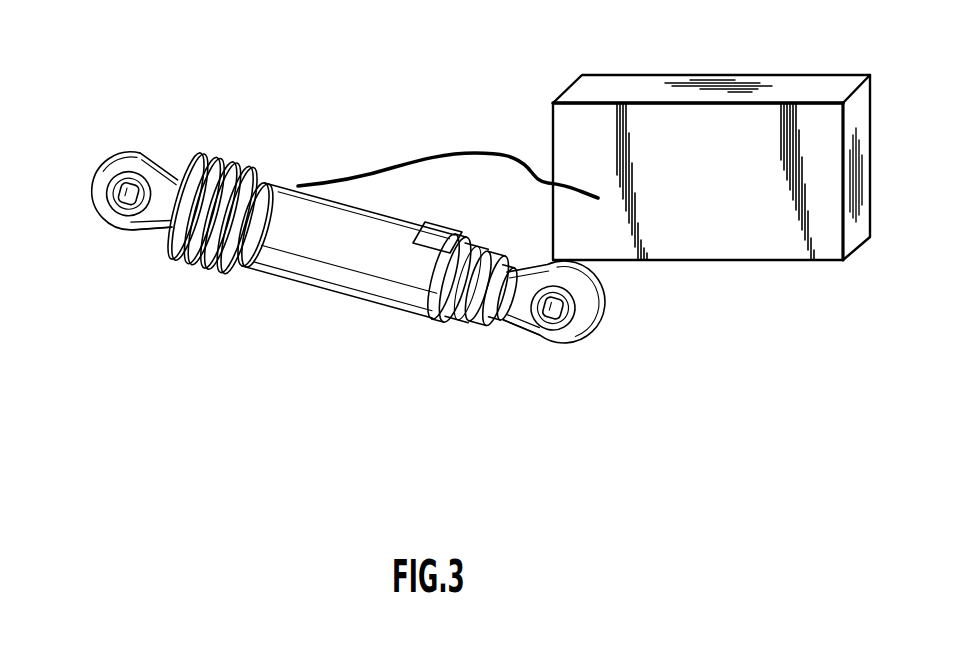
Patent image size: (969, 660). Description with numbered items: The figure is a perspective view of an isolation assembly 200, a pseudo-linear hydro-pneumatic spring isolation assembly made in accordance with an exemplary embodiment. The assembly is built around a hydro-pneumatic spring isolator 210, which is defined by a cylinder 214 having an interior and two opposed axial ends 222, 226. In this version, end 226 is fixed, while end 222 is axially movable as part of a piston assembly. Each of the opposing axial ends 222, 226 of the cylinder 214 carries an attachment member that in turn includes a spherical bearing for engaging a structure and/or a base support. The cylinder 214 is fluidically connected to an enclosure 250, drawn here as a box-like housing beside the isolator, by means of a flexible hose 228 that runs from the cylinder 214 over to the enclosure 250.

The isolation assembly 200 is at (190, 25).
The hydro-pneumatic spring isolator 210 is at (285, 182).
The cylinder 214 is at (334, 288).
The axial end 222 is at (98, 180).
The axial end 226 is at (598, 310).
The flexible hose 228 is at (468, 150).
The enclosure 250 is at (618, 87).